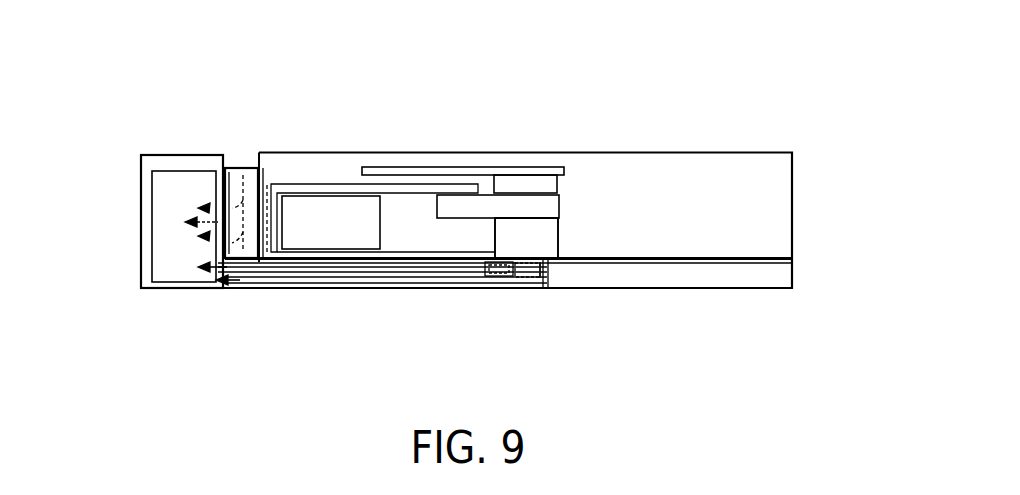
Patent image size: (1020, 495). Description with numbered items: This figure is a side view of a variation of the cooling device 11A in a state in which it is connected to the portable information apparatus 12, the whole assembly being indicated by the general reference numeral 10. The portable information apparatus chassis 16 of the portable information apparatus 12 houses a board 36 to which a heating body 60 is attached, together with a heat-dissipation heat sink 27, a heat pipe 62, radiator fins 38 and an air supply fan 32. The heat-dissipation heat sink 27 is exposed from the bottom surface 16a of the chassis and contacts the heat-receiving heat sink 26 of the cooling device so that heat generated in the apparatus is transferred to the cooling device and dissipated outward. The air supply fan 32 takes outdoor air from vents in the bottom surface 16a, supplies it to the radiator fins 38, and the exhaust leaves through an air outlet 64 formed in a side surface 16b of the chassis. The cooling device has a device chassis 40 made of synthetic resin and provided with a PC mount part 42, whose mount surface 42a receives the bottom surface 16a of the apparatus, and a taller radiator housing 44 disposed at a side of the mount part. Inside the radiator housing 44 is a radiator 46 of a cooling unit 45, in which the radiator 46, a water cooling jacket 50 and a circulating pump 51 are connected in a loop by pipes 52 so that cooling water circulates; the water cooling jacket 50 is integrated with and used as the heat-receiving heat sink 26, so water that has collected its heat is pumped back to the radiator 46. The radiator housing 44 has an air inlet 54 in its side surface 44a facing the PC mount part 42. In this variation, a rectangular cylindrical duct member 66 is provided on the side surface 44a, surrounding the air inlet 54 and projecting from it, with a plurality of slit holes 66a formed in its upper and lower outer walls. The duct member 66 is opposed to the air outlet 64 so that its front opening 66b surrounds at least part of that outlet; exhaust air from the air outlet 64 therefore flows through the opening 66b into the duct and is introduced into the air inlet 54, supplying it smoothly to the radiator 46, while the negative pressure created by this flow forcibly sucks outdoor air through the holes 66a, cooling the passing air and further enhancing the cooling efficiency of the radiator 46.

The imaging apparatus 10 is at (471, 39).
The portable information apparatus 12 is at (664, 122).
The portable information apparatus chassis 16 is at (616, 146).
The bottom surface 16a is at (760, 263).
The side surface 16b is at (257, 168).
The cooling device 11A is at (427, 319).
The heat-receiving heat sink 26 is at (533, 248).
The water cooling jacket 50 is at (526, 238).
The heat-dissipation heat sink 27 is at (485, 203).
The air supply fan 32 is at (355, 237).
The board 36 is at (440, 173).
The radiator fins 38 is at (277, 260).
The device chassis 40 is at (676, 298).
The PC mount part 42 is at (745, 280).
The mount surface 42a is at (745, 257).
The radiator housing 44 is at (150, 154).
The side surface 44a is at (223, 284).
The cooling unit 45 is at (571, 279).
The radiator 46 is at (188, 170).
The circulating pump 51 is at (505, 283).
The pipes 52 is at (473, 268).
The air inlet 54 is at (210, 240).
The heating body 60 is at (528, 183).
The heat pipe 62 is at (385, 187).
The air outlet 64 is at (265, 283).
The duct member 66 is at (235, 168).
The slit holes 66a is at (238, 172).
The front opening 66b is at (267, 183).